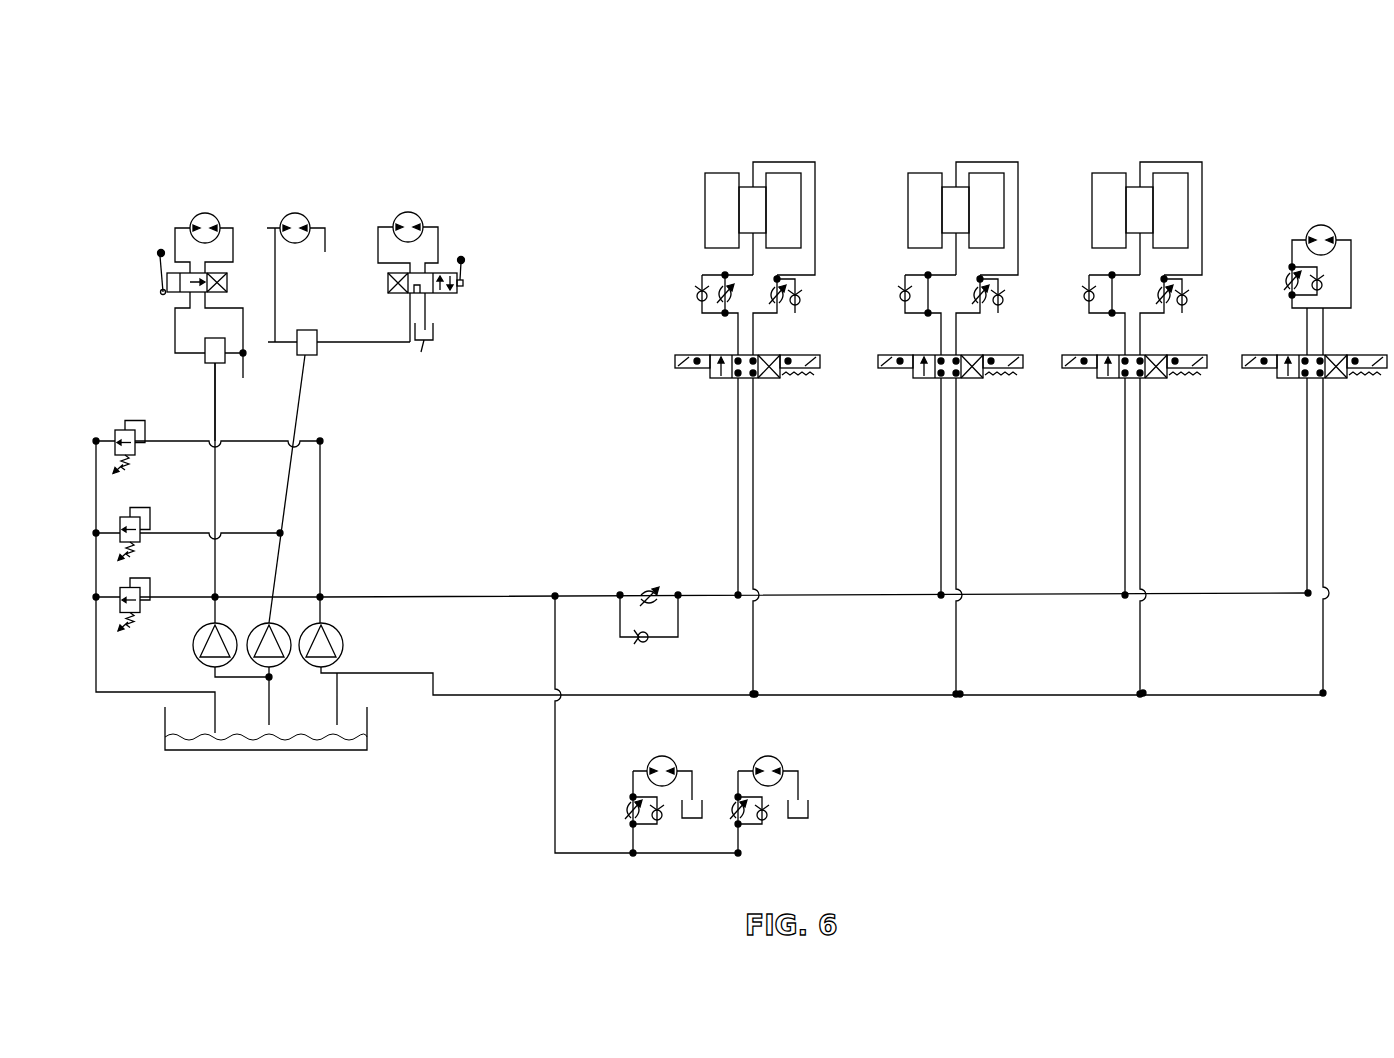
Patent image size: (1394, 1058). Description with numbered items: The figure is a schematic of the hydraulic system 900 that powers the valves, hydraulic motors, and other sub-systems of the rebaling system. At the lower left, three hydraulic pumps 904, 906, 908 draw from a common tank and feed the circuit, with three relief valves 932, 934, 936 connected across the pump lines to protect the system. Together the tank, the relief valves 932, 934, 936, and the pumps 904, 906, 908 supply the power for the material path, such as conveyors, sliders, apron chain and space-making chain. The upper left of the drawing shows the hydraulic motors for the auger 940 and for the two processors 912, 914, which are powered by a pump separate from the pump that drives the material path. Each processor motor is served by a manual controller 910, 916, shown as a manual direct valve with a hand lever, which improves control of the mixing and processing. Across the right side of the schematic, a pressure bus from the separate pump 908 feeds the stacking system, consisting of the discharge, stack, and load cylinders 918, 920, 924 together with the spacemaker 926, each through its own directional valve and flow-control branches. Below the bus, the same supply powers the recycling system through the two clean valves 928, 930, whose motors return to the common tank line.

The hydraulic system 900 is at (145, 38).
The hydraulic pump 904 is at (160, 675).
The hydraulic pump 906 is at (255, 588).
The hydraulic pump 908 is at (307, 585).
The controller 910 is at (133, 190).
The processor 912 is at (312, 105).
The processor 914 is at (518, 108).
The controller 916 is at (587, 158).
The cylinder 918 is at (770, 97).
The cylinder 920 is at (966, 97).
The cylinder 924 is at (1145, 97).
The spacemaker 926 is at (1303, 170).
The clean valve 928 is at (658, 720).
The clean valve 930 is at (765, 727).
The relief valve 932 is at (142, 400).
The relief valve 934 is at (167, 485).
The relief valve 936 is at (168, 598).
The auger 940 is at (357, 155).